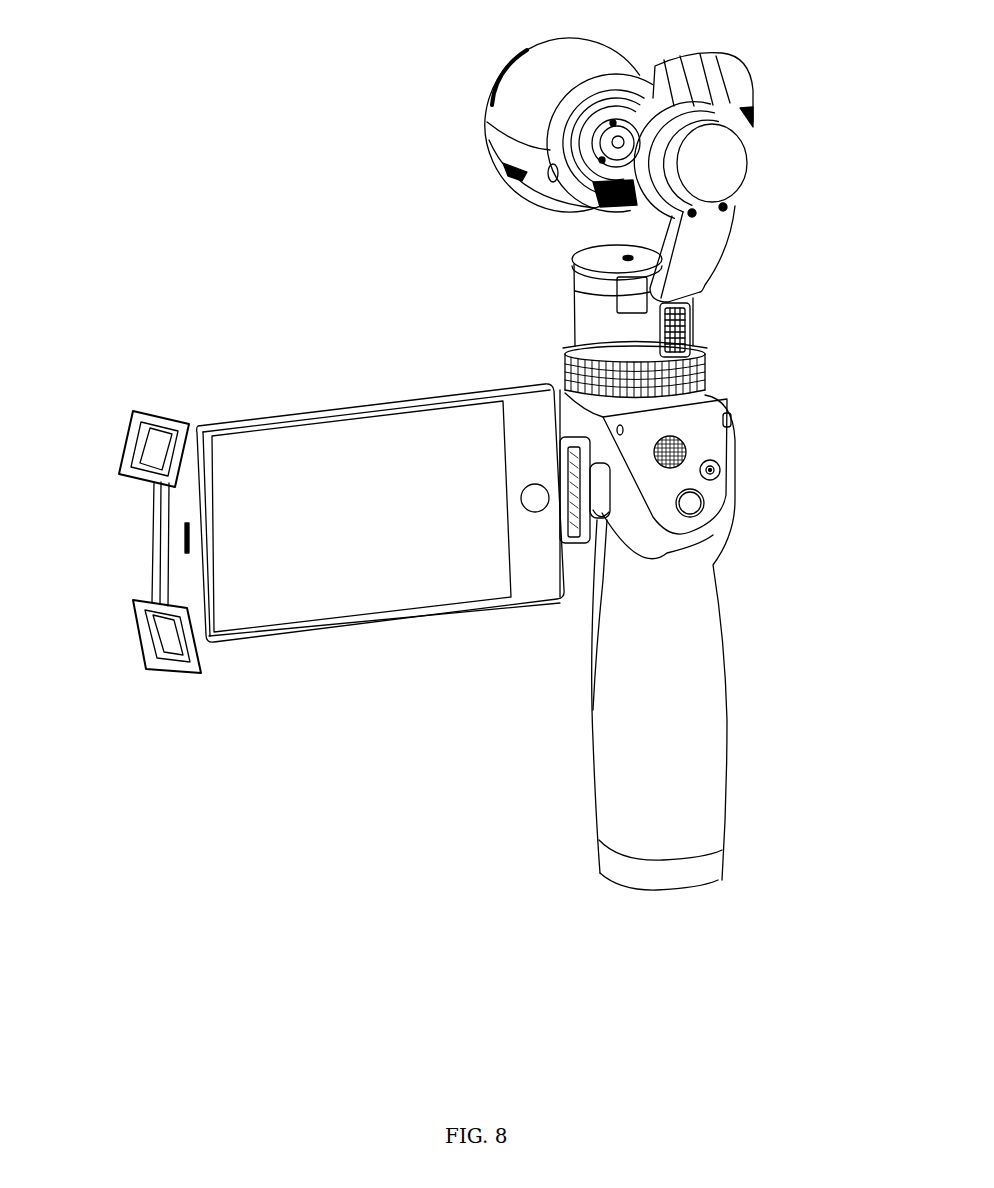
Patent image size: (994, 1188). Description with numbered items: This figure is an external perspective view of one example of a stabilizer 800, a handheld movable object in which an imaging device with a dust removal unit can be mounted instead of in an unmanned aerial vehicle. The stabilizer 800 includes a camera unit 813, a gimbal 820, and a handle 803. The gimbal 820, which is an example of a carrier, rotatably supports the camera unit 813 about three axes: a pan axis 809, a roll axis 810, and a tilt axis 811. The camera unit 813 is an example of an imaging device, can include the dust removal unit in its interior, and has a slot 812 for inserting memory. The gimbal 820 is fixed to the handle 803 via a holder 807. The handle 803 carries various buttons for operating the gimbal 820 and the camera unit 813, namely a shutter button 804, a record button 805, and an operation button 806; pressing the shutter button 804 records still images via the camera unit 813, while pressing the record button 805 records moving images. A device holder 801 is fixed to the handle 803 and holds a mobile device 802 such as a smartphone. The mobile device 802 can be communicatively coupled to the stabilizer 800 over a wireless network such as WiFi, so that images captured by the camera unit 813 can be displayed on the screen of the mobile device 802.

The stabilizer 800 is at (475, 526).
The device holder 801 is at (130, 430).
The mobile device 802 is at (172, 545).
The handle 803 is at (700, 638).
The shutter button 804 is at (690, 503).
The record button 805 is at (722, 470).
The operation button 806 is at (690, 447).
The holder 807 is at (705, 380).
The pan axis 809 is at (680, 238).
The roll axis 810 is at (730, 163).
The tilt axis 811 is at (727, 78).
The slot 812 is at (520, 199).
The camera unit 813 is at (510, 104).
The gimbal 820 is at (857, 27).